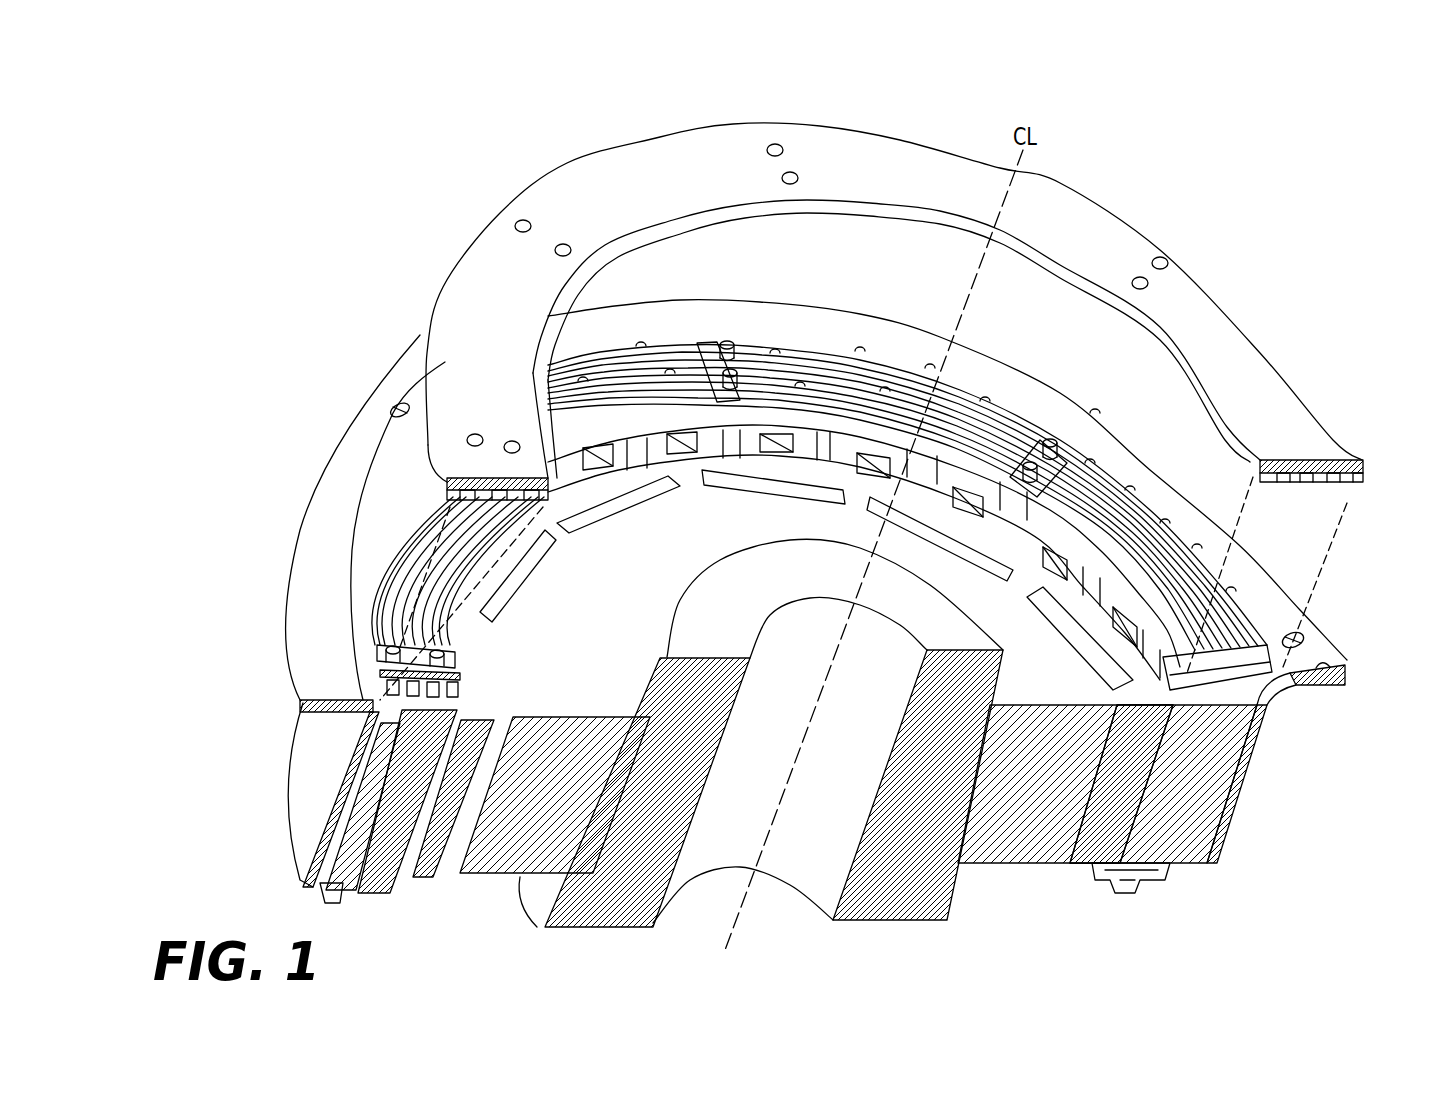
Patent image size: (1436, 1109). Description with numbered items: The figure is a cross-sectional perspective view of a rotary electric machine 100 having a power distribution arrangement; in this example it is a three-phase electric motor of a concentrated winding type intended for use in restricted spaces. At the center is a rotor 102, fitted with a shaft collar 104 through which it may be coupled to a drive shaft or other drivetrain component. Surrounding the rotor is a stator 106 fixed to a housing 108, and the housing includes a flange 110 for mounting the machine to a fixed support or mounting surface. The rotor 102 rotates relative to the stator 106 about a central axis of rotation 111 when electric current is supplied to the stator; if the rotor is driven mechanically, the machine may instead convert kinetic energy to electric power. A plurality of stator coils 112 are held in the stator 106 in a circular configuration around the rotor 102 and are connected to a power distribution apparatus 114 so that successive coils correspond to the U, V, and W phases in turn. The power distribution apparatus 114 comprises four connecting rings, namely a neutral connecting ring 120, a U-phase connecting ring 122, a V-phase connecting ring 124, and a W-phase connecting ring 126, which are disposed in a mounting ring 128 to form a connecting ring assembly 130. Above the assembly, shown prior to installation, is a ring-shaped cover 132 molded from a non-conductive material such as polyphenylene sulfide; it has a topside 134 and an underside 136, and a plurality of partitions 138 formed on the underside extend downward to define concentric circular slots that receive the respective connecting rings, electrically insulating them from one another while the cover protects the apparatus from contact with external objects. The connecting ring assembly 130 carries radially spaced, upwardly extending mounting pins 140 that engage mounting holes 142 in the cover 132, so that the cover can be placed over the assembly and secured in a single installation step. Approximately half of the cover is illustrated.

The rotary electric machine 100 is at (190, 150).
The rotor 102 is at (1022, 870).
The shaft collar 104 is at (882, 925).
The stator 106 is at (1192, 877).
The housing 108 is at (1232, 760).
The flange 110 is at (1330, 690).
The central axis of rotation 111 is at (750, 915).
The stator coils 112 is at (596, 465).
The power distribution apparatus 114 is at (330, 305).
The neutral connecting ring 120 is at (385, 678).
The U-phase connecting ring 122 is at (395, 628).
The V-phase connecting ring 124 is at (415, 608).
The W-phase connecting ring 126 is at (430, 583).
The mounting ring 128 is at (365, 664).
The connecting ring assembly 130 is at (360, 490).
The cover 132 is at (578, 146).
The topside 134 is at (458, 318).
The underside 136 is at (1308, 486).
The partitions 138 is at (1347, 488).
The mounting pins 140 is at (720, 343).
The mounting holes 142 is at (770, 146).